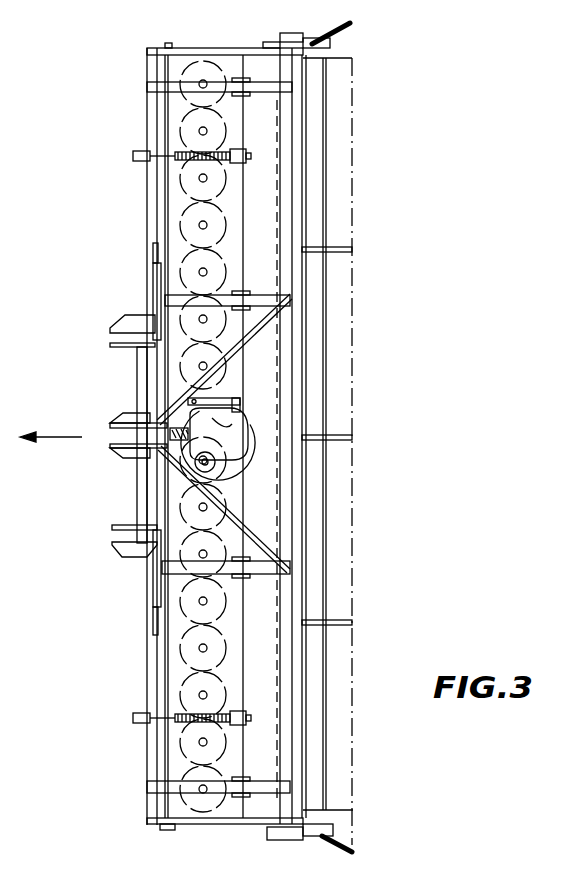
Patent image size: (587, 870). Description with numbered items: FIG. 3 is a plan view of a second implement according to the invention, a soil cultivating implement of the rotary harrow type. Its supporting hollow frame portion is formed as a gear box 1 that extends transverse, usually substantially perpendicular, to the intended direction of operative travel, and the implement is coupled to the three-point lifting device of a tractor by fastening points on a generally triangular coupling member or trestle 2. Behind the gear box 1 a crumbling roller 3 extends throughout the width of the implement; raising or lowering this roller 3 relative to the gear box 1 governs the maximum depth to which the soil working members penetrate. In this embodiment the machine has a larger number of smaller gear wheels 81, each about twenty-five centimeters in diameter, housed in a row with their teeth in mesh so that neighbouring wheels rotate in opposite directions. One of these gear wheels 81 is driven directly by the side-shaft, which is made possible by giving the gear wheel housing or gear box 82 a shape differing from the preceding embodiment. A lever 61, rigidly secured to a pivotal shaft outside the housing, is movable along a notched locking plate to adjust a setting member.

The gear box 1 is at (247, 211).
The coupling member or trestle 2 is at (138, 368).
The crumbling roller 3 is at (358, 203).
The lever 61 is at (228, 394).
The smaller gear wheels 81 is at (218, 268).
The gear wheel housing or gear box 82 is at (253, 456).